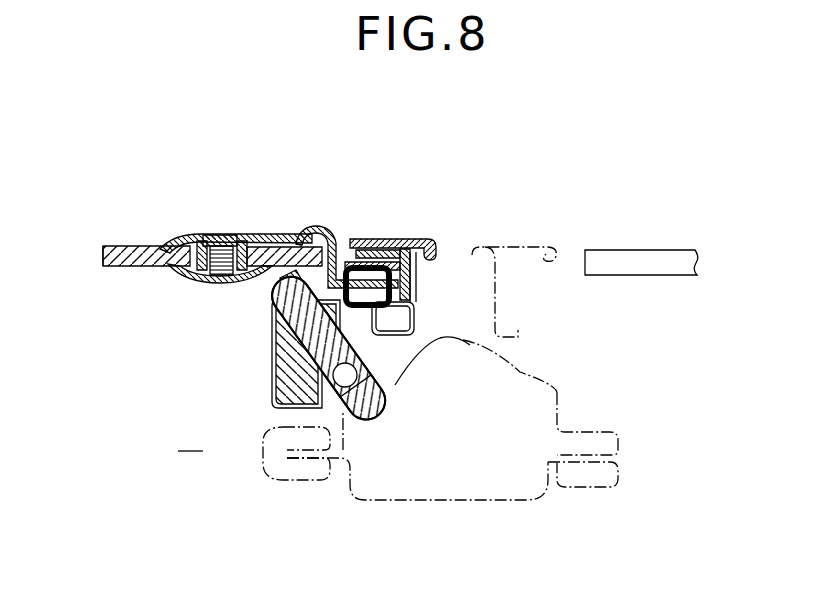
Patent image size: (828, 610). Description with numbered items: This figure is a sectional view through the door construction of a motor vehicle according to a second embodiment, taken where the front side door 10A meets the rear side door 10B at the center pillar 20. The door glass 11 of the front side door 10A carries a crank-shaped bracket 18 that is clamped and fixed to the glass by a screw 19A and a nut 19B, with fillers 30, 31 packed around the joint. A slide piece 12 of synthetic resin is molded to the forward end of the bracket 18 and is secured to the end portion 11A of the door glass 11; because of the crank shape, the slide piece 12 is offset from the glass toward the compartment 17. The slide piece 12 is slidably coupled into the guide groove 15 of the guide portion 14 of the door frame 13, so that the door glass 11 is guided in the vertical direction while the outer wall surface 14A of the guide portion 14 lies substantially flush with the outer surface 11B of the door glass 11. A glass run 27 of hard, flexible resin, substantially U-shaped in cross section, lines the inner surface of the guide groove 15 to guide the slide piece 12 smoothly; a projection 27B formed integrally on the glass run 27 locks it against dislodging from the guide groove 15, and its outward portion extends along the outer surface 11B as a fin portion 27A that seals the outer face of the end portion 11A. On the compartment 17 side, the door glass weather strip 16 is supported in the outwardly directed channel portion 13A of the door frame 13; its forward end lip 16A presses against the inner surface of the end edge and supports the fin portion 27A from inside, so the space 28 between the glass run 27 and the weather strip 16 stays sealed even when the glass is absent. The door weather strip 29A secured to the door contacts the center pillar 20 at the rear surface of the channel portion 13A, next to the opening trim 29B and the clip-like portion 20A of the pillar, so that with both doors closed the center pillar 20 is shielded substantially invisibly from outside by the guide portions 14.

The front side door 10A is at (228, 212).
The rear side door 10B is at (549, 241).
The door glass 11 is at (112, 272).
The end portion of door glass 11A is at (270, 243).
The outer surface of door glass 11B is at (125, 245).
The slide piece 12 is at (417, 292).
The door frame 13 is at (430, 340).
The outwardly directed channel portion 13A is at (365, 338).
The guide portion 14 is at (412, 240).
The outer wall surface of guide portion 14A is at (370, 240).
The guide groove 15 is at (408, 318).
The door glass weather strip 16 is at (273, 353).
The forward end lip 16A is at (280, 307).
The compartment 17 is at (191, 440).
The bracket 18 is at (290, 242).
The screw 19A is at (220, 281).
The nut 19B is at (205, 233).
The center pillar 20 is at (468, 502).
The cover clip 20A is at (285, 457).
The glass run 27 is at (477, 283).
The fin portion 27A is at (318, 238).
The projection 27B is at (386, 240).
The space 28 is at (277, 287).
The door weather strip 29A is at (382, 400).
The opening trim 29B is at (323, 480).
The filler 30 is at (185, 270).
The filler 31 is at (262, 240).